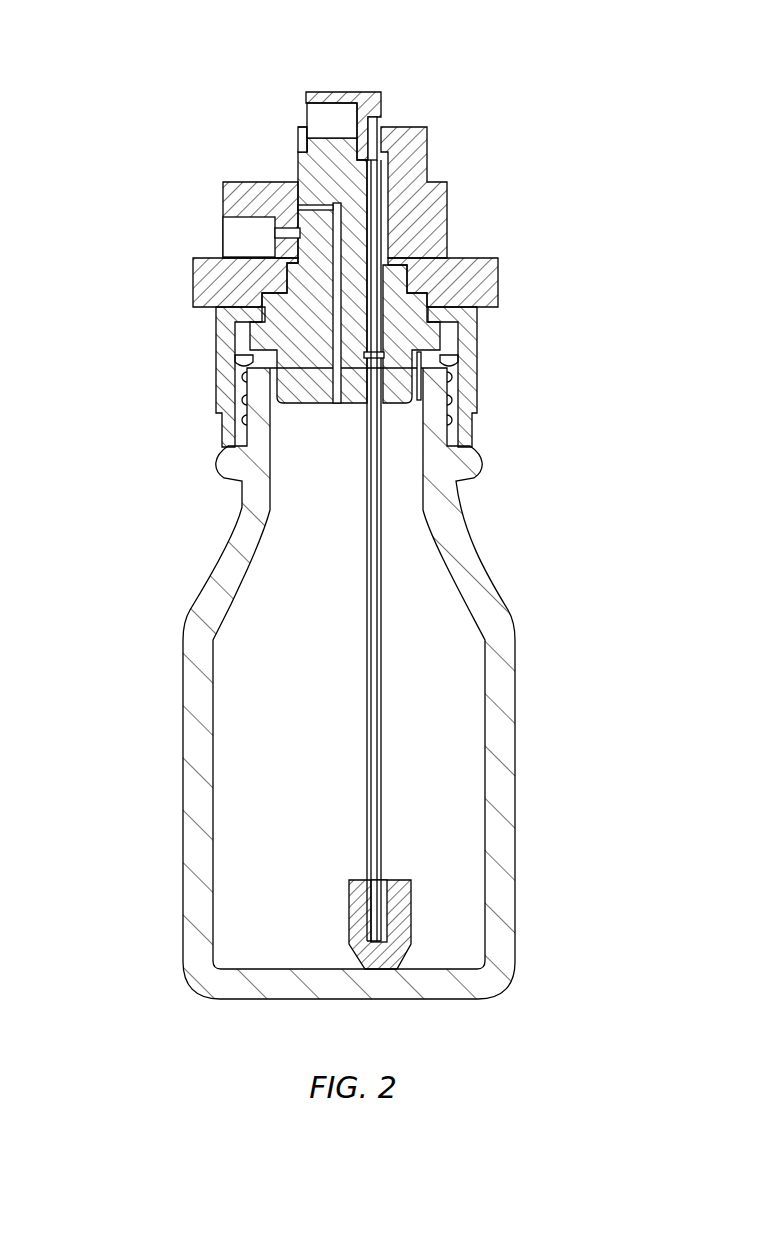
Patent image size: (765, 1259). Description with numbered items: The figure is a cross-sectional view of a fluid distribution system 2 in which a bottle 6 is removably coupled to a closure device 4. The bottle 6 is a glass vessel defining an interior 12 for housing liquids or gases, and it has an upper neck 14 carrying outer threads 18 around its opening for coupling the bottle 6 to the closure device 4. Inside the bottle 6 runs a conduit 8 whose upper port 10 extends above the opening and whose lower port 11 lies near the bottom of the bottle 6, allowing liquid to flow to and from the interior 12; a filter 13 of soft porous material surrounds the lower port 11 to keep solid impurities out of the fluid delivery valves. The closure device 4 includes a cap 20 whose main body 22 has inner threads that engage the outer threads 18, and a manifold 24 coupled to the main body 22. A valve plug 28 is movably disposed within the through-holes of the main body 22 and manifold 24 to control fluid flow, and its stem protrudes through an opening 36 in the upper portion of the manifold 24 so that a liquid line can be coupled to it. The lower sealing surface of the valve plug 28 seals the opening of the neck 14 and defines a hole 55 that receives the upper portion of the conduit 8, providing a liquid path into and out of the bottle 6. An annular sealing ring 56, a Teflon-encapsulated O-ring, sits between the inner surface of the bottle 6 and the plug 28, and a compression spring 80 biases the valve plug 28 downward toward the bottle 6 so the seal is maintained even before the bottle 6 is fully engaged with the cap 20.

The fluid distribution system 2 is at (327, 509).
The closure device 4 is at (348, 157).
The bottle 6 is at (549, 847).
The conduit 8 is at (387, 719).
The upper port 10 is at (442, 529).
The lower port 11 is at (387, 920).
The interior 12 is at (274, 746).
The filter 13 is at (463, 920).
The upper neck 14 is at (281, 411).
The outer threads 18 is at (450, 386).
The cap 20 is at (176, 357).
The main body 22 is at (500, 301).
The manifold 24 is at (427, 152).
The valve plug 28 is at (361, 76).
The opening 36 is at (298, 152).
The hole 55 is at (436, 349).
The annular sealing ring 56 is at (421, 385).
The compression spring 80 is at (283, 283).